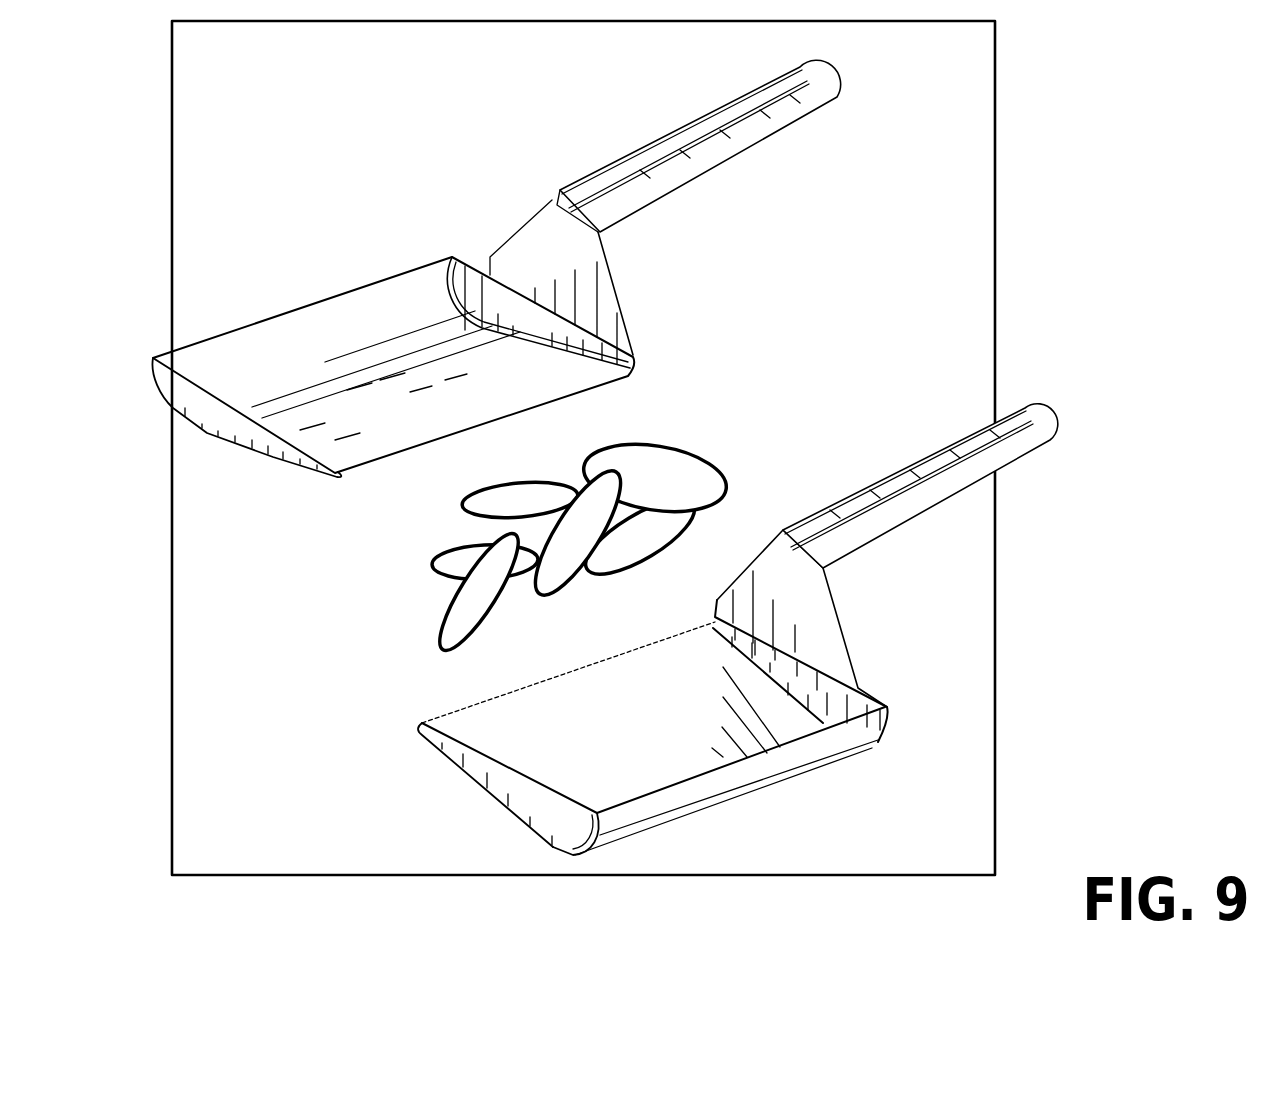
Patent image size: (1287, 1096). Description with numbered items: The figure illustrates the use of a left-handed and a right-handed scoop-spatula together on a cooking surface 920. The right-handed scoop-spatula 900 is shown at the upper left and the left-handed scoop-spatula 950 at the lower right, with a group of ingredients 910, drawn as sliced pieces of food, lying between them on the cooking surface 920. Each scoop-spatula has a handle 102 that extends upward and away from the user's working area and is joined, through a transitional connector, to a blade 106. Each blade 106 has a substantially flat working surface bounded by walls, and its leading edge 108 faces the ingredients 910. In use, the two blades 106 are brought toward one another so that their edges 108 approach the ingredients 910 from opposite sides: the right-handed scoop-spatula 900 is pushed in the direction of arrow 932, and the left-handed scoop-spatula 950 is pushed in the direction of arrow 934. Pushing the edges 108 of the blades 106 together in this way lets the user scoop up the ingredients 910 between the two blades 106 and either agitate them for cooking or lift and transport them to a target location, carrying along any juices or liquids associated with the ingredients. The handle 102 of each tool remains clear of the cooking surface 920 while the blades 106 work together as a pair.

The right-handed scoop-spatula 900 is at (531, 157).
The left-handed scoop-spatula 950 is at (896, 444).
The handle 102 is at (780, 138).
The blade 106 is at (647, 711).
The edge 108 is at (602, 380).
The ingredients 910 is at (426, 598).
The cooking surface 920 is at (994, 775).
The arrow 932 is at (467, 432).
The arrow 934 is at (568, 629).